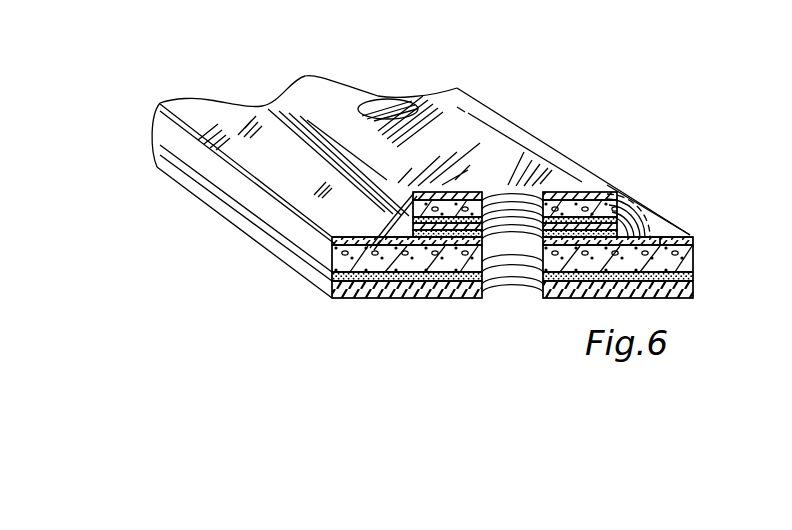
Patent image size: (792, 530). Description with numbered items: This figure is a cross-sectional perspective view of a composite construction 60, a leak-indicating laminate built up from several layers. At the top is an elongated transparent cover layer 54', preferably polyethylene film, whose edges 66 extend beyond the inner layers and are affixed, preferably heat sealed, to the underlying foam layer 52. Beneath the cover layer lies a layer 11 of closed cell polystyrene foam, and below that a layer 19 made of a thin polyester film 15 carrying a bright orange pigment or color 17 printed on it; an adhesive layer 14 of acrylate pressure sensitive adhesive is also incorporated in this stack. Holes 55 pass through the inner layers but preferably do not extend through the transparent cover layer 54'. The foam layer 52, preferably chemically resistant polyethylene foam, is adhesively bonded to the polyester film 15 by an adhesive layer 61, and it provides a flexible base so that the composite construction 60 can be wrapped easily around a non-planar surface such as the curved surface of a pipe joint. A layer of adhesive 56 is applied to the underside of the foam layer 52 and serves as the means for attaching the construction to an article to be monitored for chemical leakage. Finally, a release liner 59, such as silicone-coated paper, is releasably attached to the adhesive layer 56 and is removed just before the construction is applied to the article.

The composite construction 60 is at (291, 54).
The edges of transparent cover layer 66 is at (207, 108).
The transparent cover layer 54' is at (711, 226).
The adhesive layer 61 is at (648, 215).
The foam layer 52 is at (688, 253).
The adhesive layer 56 is at (690, 281).
The release liner 59 is at (353, 300).
The closed cell foam layer 11 is at (586, 207).
The adhesive layer 14 is at (603, 205).
The colored film layer 19 is at (613, 207).
The polyester film 15 is at (603, 222).
The pigment or color 17 is at (383, 220).
The holes 55 is at (383, 98).